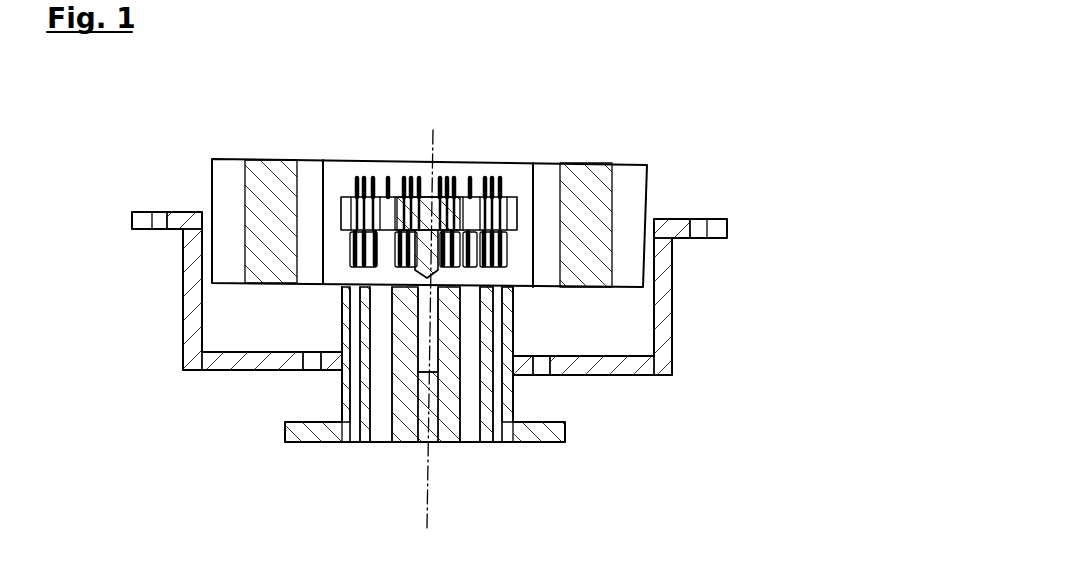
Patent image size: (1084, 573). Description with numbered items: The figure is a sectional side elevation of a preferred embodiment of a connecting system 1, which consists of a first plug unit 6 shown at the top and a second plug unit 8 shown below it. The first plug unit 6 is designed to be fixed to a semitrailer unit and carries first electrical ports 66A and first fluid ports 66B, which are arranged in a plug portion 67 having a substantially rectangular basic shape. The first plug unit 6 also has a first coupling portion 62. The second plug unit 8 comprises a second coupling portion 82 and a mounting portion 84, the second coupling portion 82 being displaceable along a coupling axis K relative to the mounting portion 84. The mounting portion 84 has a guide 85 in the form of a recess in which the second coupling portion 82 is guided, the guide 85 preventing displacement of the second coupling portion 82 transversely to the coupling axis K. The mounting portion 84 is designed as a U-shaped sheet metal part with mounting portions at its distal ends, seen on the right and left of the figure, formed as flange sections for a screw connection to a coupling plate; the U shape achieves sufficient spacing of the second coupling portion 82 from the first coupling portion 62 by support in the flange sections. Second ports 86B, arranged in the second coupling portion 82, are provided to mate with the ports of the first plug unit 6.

The connecting system 1 is at (809, 115).
The coupling axis K is at (433, 145).
The first plug unit 6 is at (604, 154).
The first coupling portion 62 is at (268, 265).
The plug portion 67 is at (512, 195).
The first electrical ports 66A is at (357, 250).
The first fluid ports 66B is at (473, 248).
The second plug unit 8 is at (622, 432).
The second coupling portion 82 is at (518, 309).
The mounting portion 84 is at (672, 306).
The guide 85 is at (340, 365).
The second ports 86B is at (386, 442).